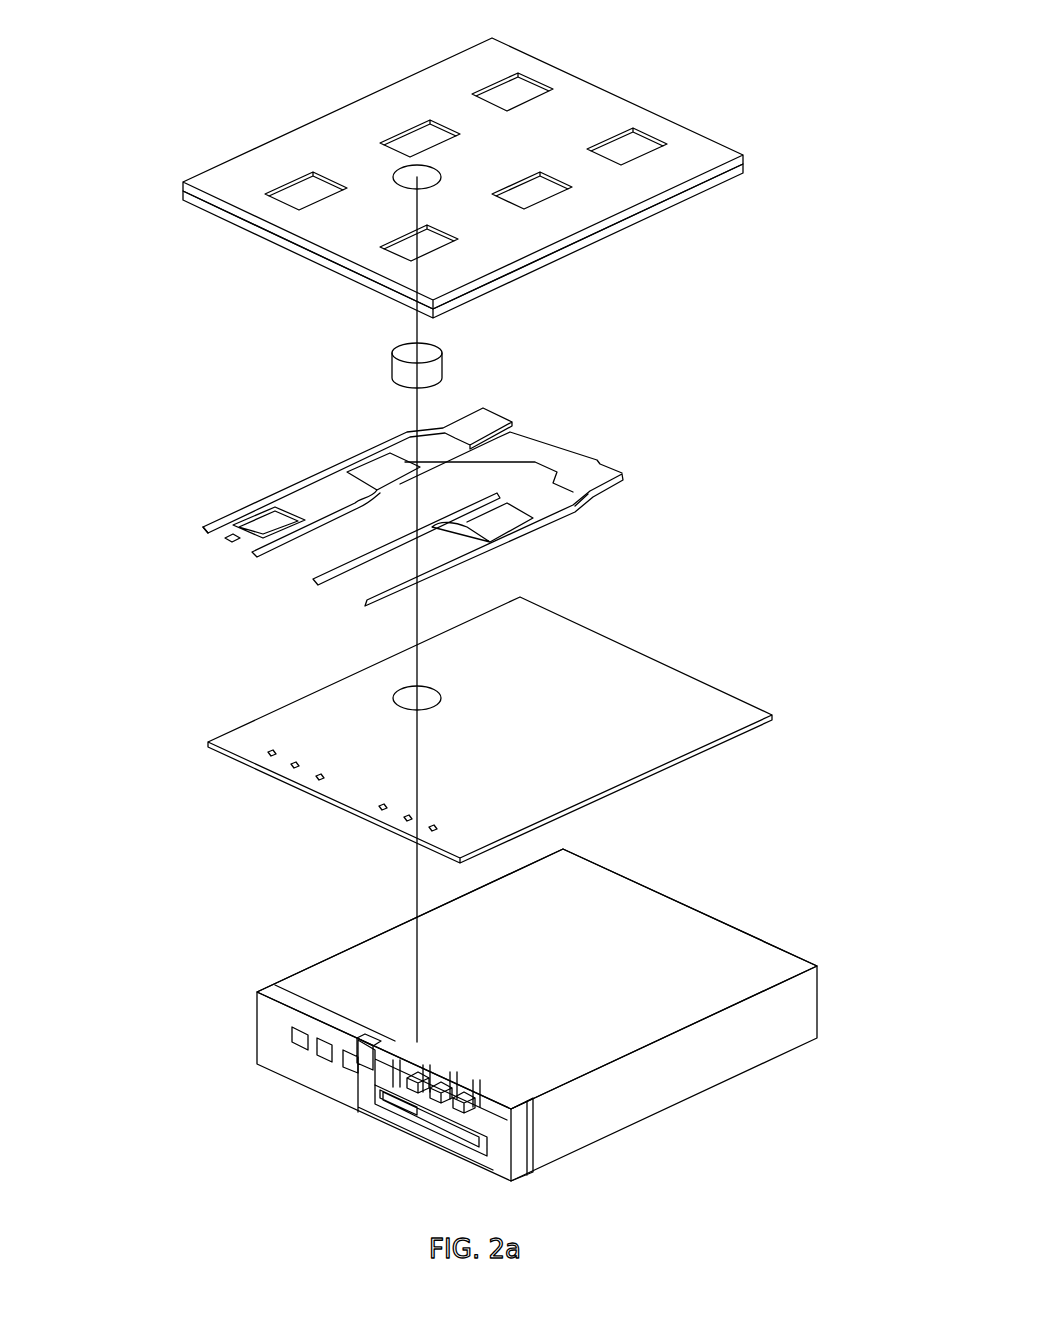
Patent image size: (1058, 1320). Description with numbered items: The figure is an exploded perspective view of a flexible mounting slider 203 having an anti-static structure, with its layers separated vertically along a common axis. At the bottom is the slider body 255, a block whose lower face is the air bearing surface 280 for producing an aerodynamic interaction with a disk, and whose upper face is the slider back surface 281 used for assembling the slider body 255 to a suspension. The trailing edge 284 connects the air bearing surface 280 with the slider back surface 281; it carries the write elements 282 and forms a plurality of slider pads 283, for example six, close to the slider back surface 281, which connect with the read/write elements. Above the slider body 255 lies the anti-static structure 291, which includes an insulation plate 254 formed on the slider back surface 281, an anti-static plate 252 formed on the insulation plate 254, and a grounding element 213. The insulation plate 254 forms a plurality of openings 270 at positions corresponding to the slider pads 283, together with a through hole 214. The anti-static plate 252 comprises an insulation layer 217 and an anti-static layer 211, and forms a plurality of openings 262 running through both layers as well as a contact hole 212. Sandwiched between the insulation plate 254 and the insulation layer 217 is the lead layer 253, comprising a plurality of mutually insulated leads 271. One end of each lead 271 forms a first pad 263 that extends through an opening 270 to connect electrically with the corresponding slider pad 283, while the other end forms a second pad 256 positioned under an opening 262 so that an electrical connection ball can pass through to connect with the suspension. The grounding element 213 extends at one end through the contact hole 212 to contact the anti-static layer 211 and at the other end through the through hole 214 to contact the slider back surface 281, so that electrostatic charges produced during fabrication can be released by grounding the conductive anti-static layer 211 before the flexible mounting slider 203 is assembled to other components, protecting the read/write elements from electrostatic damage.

The flexible mounting slider 203 is at (777, 55).
The anti-static layer 211 is at (710, 173).
The contact hole 212 is at (393, 175).
The grounding element 213 is at (428, 363).
The through hole 214 is at (400, 700).
The insulation layer 217 is at (647, 215).
The anti-static plate 252 is at (577, 268).
The lead layer 253 is at (250, 575).
The insulation plate 254 is at (537, 620).
The slider body 255 is at (180, 1021).
The second pad 256 is at (483, 418).
The openings 262 is at (513, 102).
The first pad 263 is at (203, 530).
The openings 270 is at (267, 750).
The lead 271 is at (298, 483).
The air bearing surface 280 is at (590, 1139).
The slider back surface 281 is at (682, 963).
The write elements 282 is at (383, 1105).
The slider pads 283 is at (313, 1007).
The trailing edge 284 is at (297, 1067).
The anti-static structure 291 is at (733, 304).